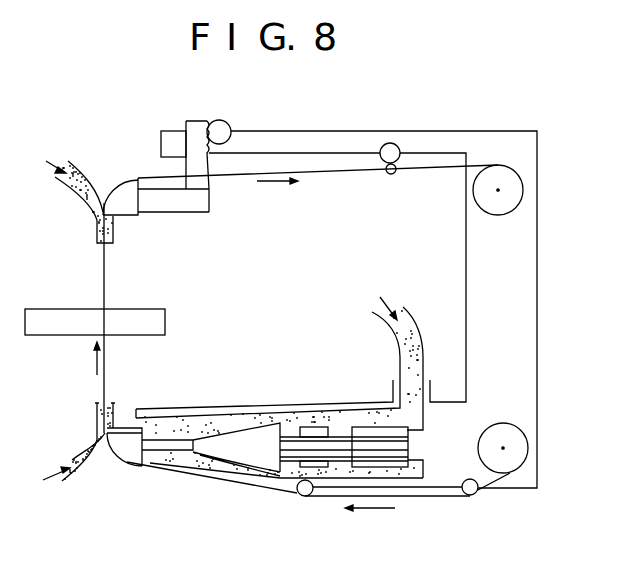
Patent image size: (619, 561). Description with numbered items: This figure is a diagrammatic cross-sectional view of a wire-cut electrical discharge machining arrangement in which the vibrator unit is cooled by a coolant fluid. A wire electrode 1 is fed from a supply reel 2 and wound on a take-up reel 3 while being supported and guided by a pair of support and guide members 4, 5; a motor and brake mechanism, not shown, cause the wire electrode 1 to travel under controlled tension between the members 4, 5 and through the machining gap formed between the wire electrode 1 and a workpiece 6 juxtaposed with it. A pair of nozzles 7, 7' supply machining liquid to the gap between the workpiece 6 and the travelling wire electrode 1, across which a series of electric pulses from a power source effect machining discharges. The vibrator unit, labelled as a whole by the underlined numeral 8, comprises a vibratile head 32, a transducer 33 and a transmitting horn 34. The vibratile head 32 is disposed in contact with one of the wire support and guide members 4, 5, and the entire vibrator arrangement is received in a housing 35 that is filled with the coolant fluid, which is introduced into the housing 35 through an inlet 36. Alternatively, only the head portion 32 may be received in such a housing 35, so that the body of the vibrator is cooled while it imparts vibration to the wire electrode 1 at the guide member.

The wire electrode 1 is at (104, 273).
The supply reel 2 is at (500, 425).
The take-up reel 3 is at (501, 170).
The support and guide member 4 is at (124, 452).
The support and guide member 5 is at (122, 188).
The workpiece 6 is at (58, 309).
The nozzle 7 is at (79, 202).
The nozzle 7' is at (76, 440).
The ejector device 8 is at (308, 394).
The vibratile head 32 is at (166, 419).
The transducer 33 is at (352, 425).
The transmitting horn 34 is at (242, 425).
The housing 35 is at (209, 414).
The inlet 36 is at (405, 315).